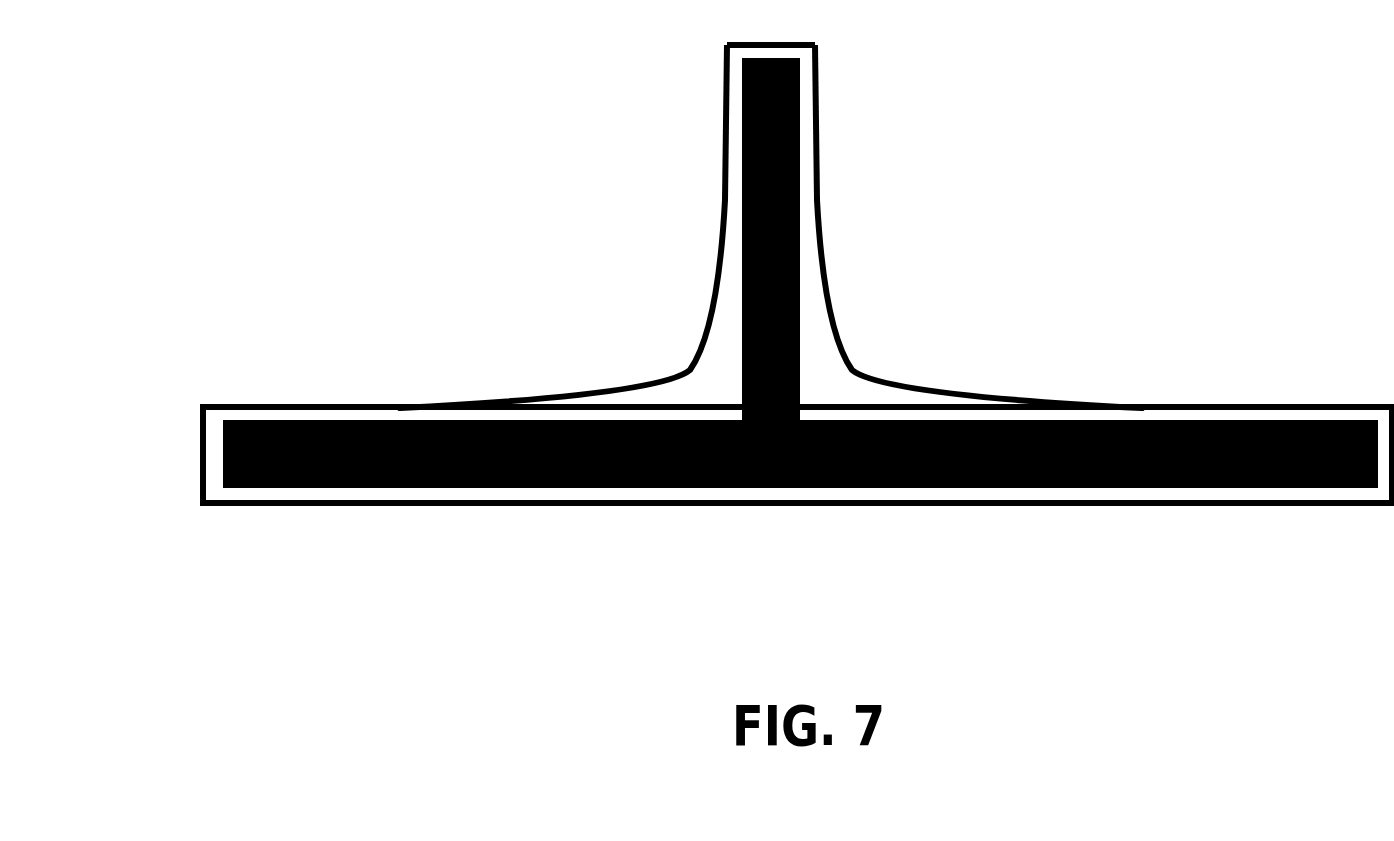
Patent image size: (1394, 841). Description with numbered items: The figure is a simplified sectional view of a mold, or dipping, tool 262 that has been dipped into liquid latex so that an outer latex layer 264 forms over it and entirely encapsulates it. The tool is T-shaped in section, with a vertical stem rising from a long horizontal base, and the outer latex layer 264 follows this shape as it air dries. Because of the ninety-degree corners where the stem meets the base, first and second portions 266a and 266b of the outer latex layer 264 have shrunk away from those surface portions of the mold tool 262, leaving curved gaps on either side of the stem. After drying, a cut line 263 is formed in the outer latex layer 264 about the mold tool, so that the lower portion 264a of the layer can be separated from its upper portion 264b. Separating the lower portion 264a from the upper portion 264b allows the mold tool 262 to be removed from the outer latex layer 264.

The mold tool 262 is at (423, 497).
The cut line 263 is at (215, 430).
The outer latex layer 264 is at (808, 137).
The lower portion of outer latex layer 264a is at (1153, 493).
The upper portion of outer latex layer 264b is at (1177, 415).
The first portion of outer latex layer 266a is at (695, 380).
The second portion of outer latex layer 266b is at (827, 372).